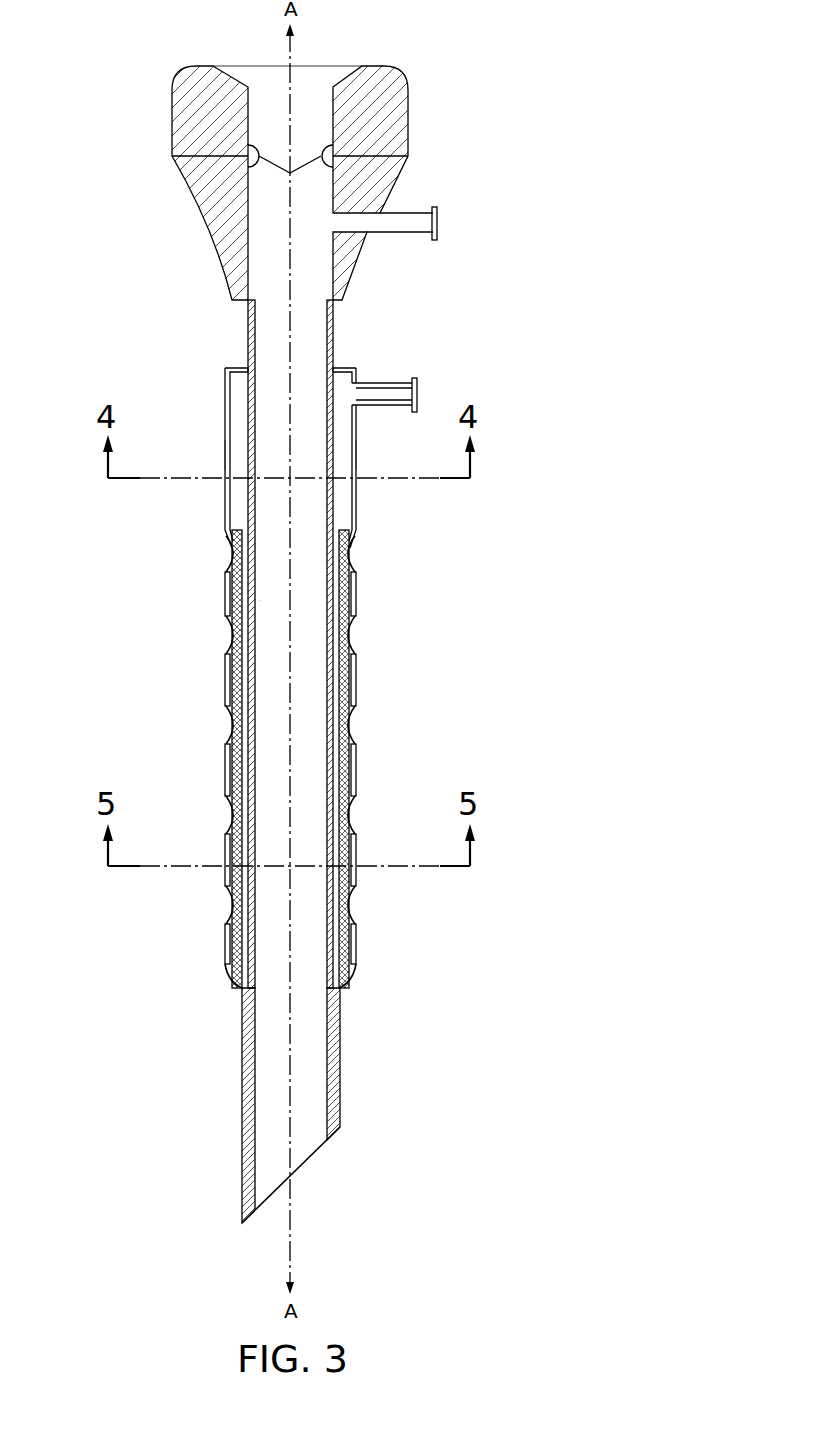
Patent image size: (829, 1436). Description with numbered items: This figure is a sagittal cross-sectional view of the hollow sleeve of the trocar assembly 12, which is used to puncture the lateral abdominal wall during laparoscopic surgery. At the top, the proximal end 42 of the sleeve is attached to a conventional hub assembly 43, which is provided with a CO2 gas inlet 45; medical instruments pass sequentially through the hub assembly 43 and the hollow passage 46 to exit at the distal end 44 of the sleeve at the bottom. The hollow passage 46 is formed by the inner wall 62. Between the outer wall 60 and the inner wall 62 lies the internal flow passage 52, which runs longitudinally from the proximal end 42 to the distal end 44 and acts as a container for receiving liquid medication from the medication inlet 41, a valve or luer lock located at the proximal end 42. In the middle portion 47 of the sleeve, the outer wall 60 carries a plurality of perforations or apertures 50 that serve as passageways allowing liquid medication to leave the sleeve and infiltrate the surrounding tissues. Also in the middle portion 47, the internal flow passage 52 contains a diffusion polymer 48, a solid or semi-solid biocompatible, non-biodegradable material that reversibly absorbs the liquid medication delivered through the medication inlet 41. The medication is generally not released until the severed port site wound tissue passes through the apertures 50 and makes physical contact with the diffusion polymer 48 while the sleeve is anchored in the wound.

The trocar assembly 12 is at (519, 78).
The medication inlet 41 is at (418, 389).
The proximal end 42 is at (220, 412).
The hub assembly 43 is at (405, 108).
The distal end 44 is at (210, 1167).
The CO2 gas inlet 45 is at (417, 211).
The hollow passage 46 is at (307, 967).
The middle portion 47 is at (122, 755).
The diffusion polymer 48 is at (235, 553).
The apertures 50 is at (350, 823).
The internal flow passage 52 is at (230, 464).
The outer wall 60 is at (225, 497).
The inner wall 62 is at (252, 468).